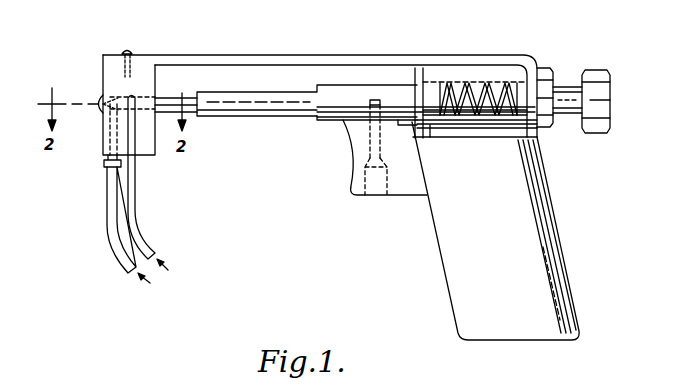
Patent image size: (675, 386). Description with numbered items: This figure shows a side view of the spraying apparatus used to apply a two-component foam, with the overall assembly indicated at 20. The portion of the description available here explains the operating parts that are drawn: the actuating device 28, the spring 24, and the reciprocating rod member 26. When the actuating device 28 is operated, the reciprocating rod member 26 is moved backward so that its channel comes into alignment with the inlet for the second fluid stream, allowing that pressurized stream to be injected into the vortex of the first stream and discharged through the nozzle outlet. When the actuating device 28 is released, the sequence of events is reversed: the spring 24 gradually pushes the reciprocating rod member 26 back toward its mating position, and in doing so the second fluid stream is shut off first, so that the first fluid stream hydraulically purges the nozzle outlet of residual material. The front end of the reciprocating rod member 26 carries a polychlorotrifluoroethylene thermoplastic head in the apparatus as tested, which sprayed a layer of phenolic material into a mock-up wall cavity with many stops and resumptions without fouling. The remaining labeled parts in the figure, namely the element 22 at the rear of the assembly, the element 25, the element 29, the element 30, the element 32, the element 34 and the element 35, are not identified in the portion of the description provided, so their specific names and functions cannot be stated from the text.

The spray gun assembly 20 is at (556, 53).
The adjusting nut 22 is at (600, 93).
The spring 24 is at (490, 83).
The spring housing 25 is at (451, 83).
The reciprocating rod member 26 is at (328, 108).
The actuating device 28 is at (405, 186).
The trigger 29 is at (372, 146).
The handle 30 is at (552, 270).
The supply tube 32 is at (110, 235).
The supply tube 34 is at (136, 212).
The nozzle head block 35 is at (98, 80).